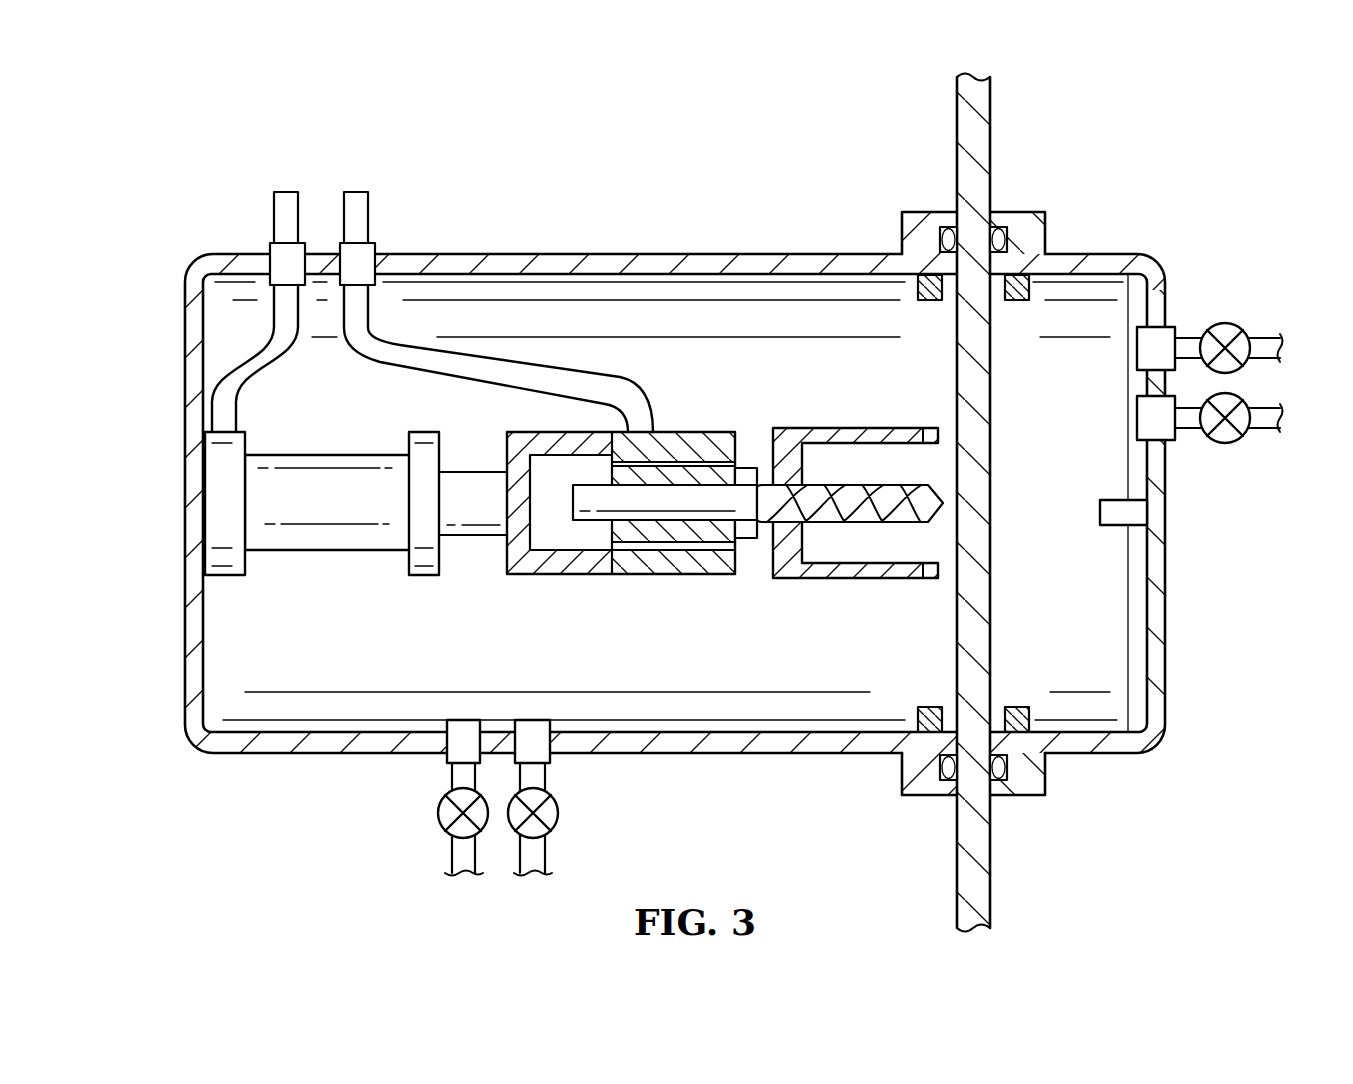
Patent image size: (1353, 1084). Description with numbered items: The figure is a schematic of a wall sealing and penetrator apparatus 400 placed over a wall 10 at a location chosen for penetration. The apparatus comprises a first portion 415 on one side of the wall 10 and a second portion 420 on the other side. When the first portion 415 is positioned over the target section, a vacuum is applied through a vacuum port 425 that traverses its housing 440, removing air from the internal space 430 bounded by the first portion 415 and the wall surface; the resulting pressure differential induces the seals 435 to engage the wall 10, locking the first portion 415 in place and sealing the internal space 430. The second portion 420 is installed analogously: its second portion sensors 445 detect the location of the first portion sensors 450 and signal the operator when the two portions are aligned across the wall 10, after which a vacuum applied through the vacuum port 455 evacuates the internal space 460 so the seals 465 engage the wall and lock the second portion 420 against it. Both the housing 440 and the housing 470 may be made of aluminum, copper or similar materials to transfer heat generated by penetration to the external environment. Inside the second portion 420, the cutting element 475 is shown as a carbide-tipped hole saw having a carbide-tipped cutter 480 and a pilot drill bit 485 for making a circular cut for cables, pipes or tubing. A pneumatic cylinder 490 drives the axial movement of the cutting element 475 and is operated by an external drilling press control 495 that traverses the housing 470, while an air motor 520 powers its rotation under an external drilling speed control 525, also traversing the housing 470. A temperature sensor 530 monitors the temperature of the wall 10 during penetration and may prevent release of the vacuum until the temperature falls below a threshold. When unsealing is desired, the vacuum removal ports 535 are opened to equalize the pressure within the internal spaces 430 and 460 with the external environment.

The wall 10 is at (995, 905).
The wall sealing and penetrator apparatus 400 is at (195, 128).
The first portion 415 is at (1170, 790).
The second portion 420 is at (197, 788).
The vacuum port 425 is at (1181, 328).
The internal space 430 is at (1097, 583).
The seals 435 is at (999, 227).
The housing 440 is at (1158, 642).
The second portion sensors 445 is at (930, 300).
The first portion sensors 450 is at (1017, 300).
The vacuum port 455 is at (451, 776).
The internal space 460 is at (285, 708).
The seals 465 is at (947, 227).
The housing 470 is at (185, 380).
The cutting element 475 is at (836, 612).
The carbide-tipped cutter 480 is at (828, 428).
The pilot drill bit 485 is at (840, 522).
The pneumatic cylinder 490 is at (327, 552).
The external drilling press control 495 is at (284, 192).
The motor 520 is at (690, 432).
The external drilling speed control 525 is at (354, 192).
The temperature sensor 530 is at (1100, 508).
The vacuum removal ports 535 is at (1242, 428).